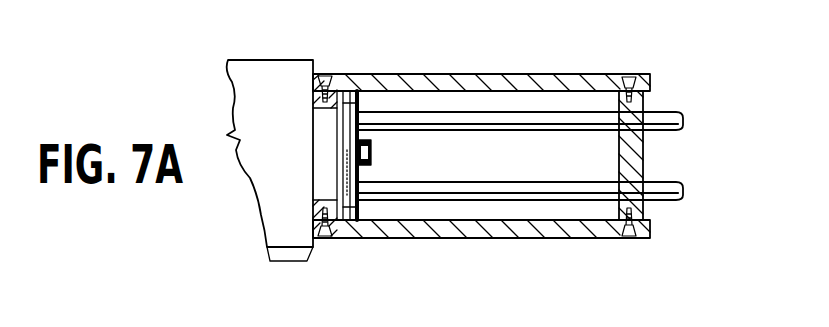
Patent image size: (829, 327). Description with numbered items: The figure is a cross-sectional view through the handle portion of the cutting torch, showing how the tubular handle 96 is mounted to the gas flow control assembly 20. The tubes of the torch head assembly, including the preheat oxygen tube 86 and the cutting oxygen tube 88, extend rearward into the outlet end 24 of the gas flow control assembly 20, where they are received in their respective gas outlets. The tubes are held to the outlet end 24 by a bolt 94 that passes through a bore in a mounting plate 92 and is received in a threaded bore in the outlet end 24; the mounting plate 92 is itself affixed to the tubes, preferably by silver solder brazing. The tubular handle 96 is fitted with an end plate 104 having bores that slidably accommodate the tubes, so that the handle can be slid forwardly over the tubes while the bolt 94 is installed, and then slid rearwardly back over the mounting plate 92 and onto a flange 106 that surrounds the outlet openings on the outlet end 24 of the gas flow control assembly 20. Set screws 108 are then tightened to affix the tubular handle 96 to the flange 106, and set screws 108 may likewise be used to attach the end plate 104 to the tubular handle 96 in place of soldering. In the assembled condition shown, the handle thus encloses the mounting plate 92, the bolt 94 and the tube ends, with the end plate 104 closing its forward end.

The gas flow control assembly 20 is at (298, 70).
The outlet end 24 is at (327, 155).
The preheat oxygen tube 86 is at (672, 201).
The cutting oxygen tube 88 is at (672, 111).
The mounting plate 92 is at (357, 98).
The bolt 94 is at (373, 152).
The tubular handle 96 is at (521, 74).
The end plate 104 is at (645, 155).
The flange 106 is at (355, 158).
The set screws 108 is at (327, 73).